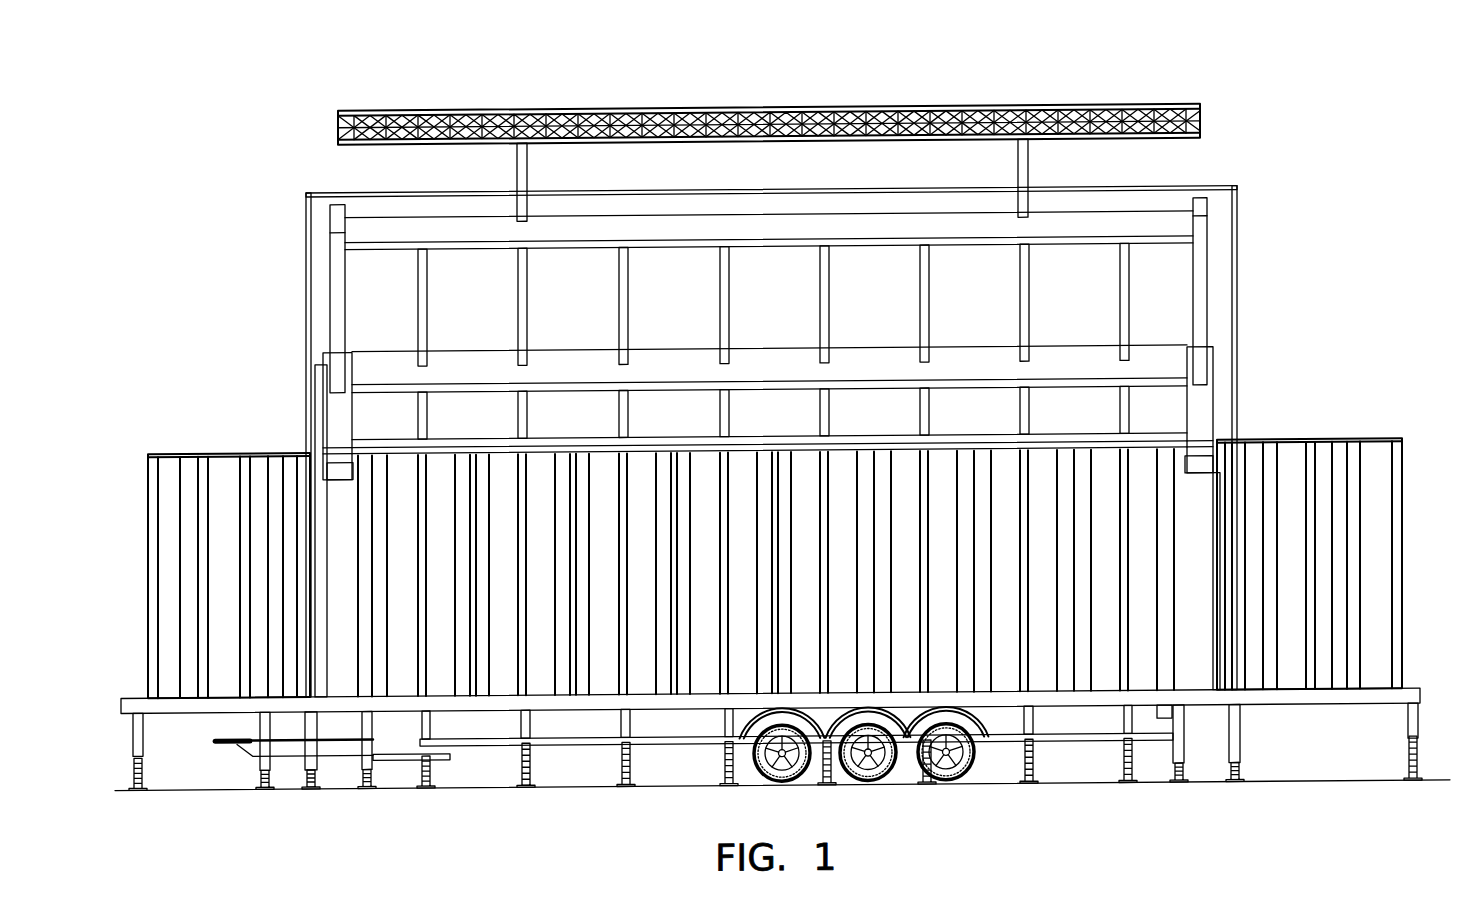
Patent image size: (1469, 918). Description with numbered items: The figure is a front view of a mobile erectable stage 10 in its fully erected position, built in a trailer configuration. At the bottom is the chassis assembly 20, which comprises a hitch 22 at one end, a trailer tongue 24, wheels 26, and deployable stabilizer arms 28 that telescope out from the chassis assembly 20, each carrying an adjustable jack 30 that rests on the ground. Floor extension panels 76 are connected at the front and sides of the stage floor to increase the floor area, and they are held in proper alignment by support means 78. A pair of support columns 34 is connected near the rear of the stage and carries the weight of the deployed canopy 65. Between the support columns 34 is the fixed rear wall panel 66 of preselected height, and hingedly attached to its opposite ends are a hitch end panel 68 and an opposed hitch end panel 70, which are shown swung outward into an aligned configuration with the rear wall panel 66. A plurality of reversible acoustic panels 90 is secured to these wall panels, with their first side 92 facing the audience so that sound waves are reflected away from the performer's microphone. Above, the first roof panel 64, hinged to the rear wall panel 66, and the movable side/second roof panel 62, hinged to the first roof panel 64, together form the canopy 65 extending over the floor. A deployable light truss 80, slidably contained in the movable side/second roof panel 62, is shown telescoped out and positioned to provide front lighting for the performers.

The mobile erectable stage 10 is at (250, 167).
The chassis assembly 20 is at (762, 761).
The hitch 22 is at (234, 746).
The trailer tongue 24 is at (285, 757).
The wheels 26 is at (763, 786).
The stabilizer arms 28 is at (376, 726).
The adjustable jack 30 is at (368, 738).
The support columns 34 is at (335, 520).
The movable side/second roof panel 62 is at (305, 243).
The first roof panel 64 is at (311, 420).
The canopy 65 is at (260, 305).
The rear wall panel 66 is at (1105, 452).
The hitch end panel 68 is at (734, 552).
The opposed hitch end panel 70 is at (1337, 548).
The floor extension panels 76 is at (143, 700).
The support means 78 is at (523, 727).
The light truss 80 is at (1162, 110).
The reversible acoustic panels 90 is at (172, 468).
The first side 92 is at (1253, 461).